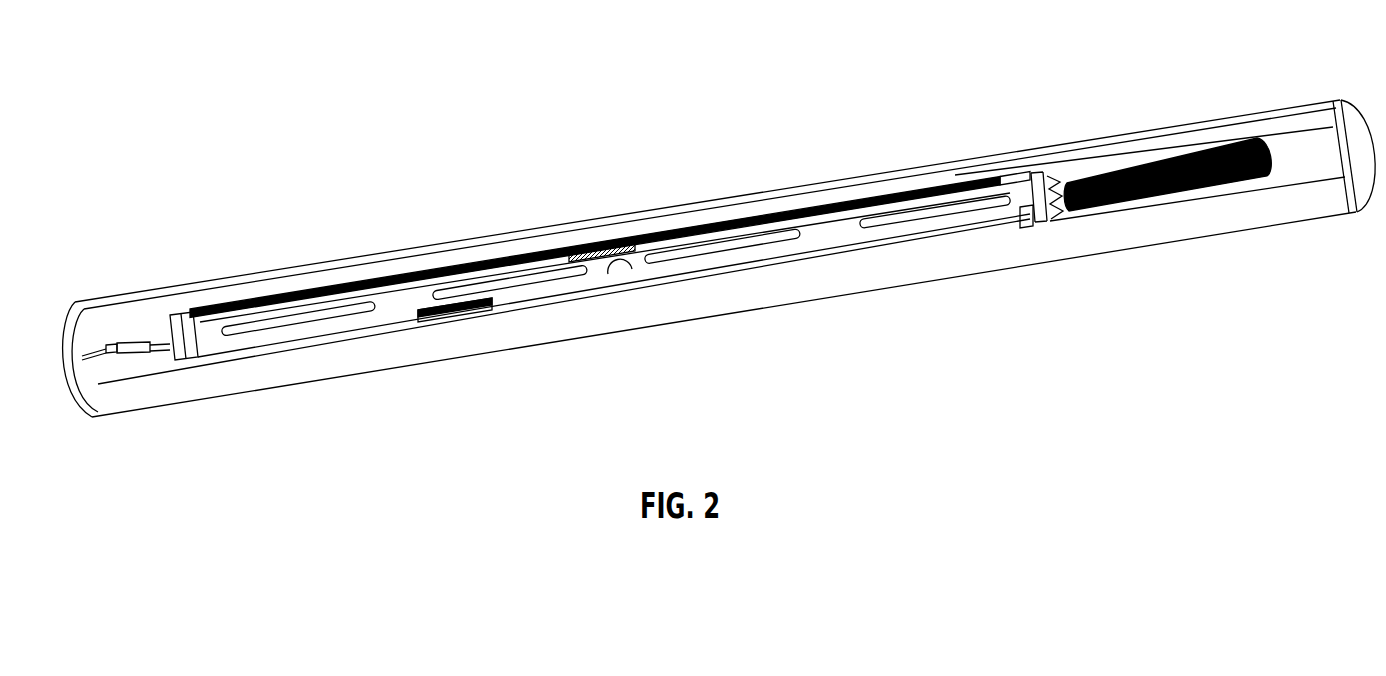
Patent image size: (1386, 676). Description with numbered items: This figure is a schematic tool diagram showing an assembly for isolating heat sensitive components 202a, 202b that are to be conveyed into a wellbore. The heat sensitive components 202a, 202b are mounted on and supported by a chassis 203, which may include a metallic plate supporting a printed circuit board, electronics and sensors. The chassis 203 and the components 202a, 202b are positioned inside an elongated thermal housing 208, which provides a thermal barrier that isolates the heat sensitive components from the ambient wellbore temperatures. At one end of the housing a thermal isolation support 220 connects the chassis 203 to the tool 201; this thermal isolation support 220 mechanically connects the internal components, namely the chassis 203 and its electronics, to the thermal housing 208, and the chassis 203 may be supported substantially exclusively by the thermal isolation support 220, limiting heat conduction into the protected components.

The tool 201 is at (1340, 101).
The heat sensitive component 202a is at (258, 292).
The heat sensitive component 202b is at (445, 327).
The chassis 203 is at (626, 264).
The thermal housing 208 is at (795, 295).
The thermal isolation support 220 is at (1140, 211).